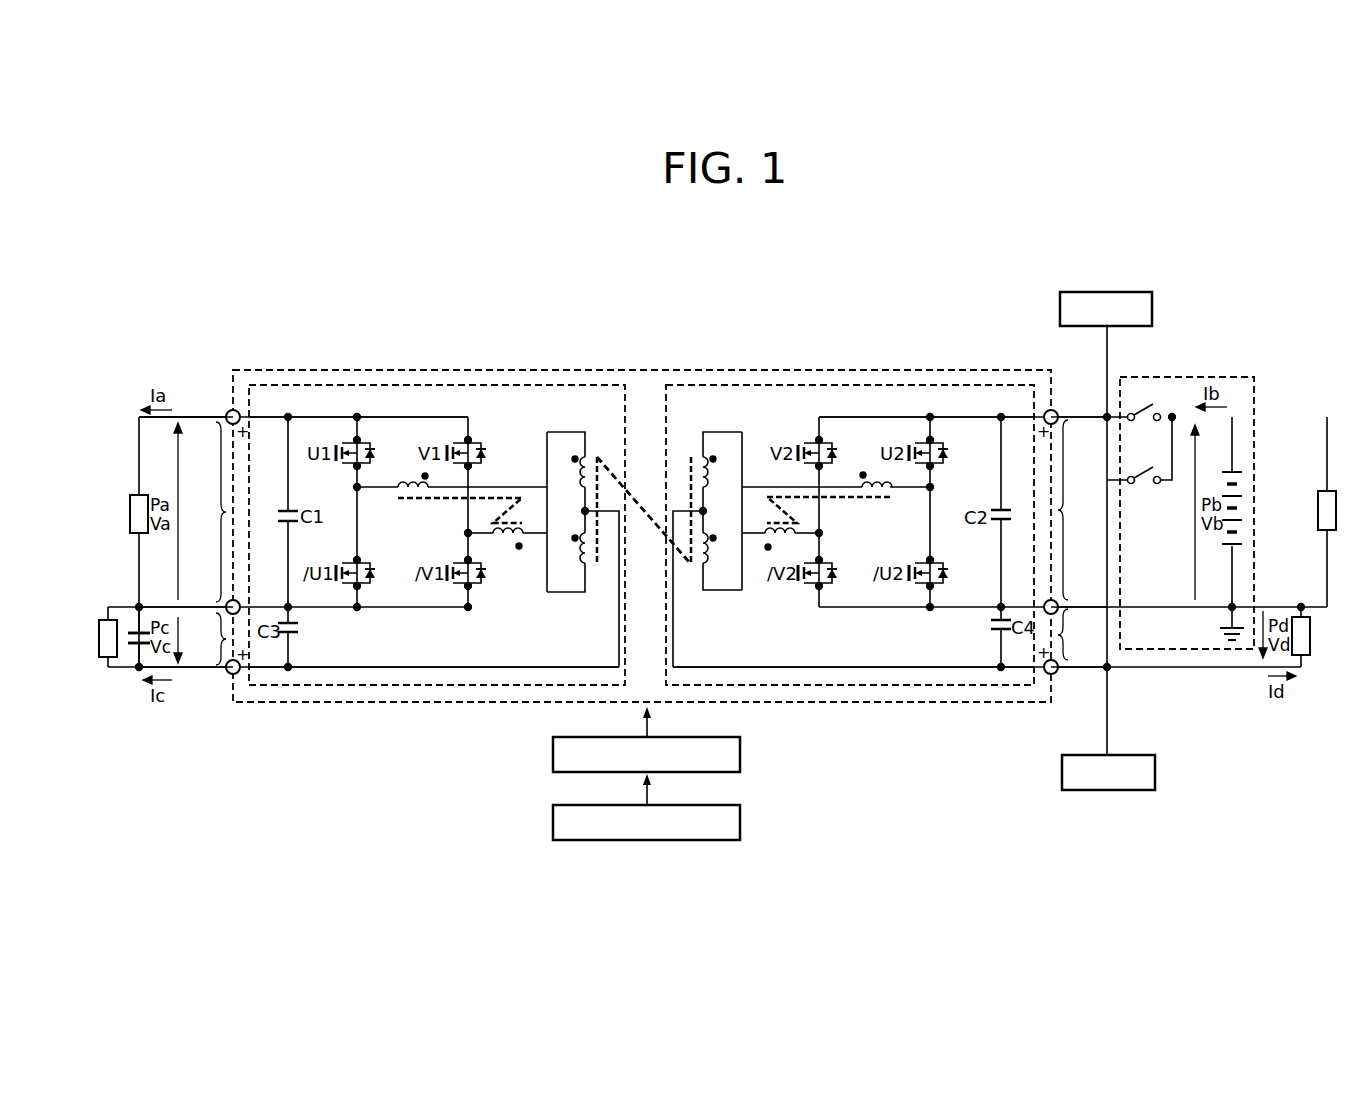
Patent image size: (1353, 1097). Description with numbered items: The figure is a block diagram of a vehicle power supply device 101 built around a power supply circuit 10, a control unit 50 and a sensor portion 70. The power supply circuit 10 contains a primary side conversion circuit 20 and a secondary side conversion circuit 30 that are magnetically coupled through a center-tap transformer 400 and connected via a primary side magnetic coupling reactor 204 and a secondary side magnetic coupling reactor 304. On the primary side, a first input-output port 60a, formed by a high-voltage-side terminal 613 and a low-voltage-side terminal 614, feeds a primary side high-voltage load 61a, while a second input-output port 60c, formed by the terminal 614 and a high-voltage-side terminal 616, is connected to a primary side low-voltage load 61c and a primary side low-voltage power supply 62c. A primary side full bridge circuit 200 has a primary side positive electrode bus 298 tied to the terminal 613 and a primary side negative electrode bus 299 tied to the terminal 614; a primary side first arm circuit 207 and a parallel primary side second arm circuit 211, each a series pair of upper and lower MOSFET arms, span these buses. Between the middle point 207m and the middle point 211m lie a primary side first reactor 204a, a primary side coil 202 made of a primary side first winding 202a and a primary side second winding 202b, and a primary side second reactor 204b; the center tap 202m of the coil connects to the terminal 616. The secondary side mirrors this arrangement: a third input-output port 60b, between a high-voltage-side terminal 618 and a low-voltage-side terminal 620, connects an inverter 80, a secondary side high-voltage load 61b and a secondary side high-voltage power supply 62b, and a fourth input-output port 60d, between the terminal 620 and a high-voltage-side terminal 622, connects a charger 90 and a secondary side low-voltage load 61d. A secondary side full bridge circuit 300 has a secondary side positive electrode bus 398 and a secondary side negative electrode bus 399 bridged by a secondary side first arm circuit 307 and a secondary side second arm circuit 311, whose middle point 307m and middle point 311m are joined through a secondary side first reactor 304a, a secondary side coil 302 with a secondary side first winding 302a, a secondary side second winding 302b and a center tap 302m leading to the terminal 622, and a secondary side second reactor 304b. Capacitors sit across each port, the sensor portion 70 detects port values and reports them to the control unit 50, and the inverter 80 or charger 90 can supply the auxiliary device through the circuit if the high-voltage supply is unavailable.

The power supply device 101 is at (186, 360).
The power supply circuit 10 is at (955, 370).
The primary side conversion circuit 20 is at (427, 380).
The primary side full bridge circuit 200 is at (505, 382).
The primary side coil 202 is at (563, 503).
The primary side first winding 202a is at (572, 458).
The primary side second winding 202b is at (576, 545).
The center tap 202m is at (585, 512).
The primary side magnetic coupling reactor 204 is at (460, 506).
The primary side first reactor 204a is at (408, 484).
The primary side second reactor 204b is at (513, 548).
The primary side first arm circuit 207 is at (348, 596).
The middle point of the primary side first arm circuit 207m is at (356, 487).
The primary side second arm circuit 211 is at (456, 596).
The middle point of the primary side second arm circuit 211m is at (466, 533).
The primary side positive electrode bus 298 is at (315, 414).
The primary side negative electrode bus 299 is at (317, 610).
The secondary side conversion circuit 30 is at (863, 378).
The secondary side full bridge circuit 300 is at (787, 382).
The secondary side coil 302 is at (727, 503).
The secondary side first winding 302a is at (716, 457).
The secondary side second winding 302b is at (713, 562).
The center tap 302m is at (706, 512).
The secondary side magnetic coupling reactor 304 is at (831, 520).
The secondary side first reactor 304a is at (863, 472).
The secondary side second reactor 304b is at (767, 550).
The secondary side first arm circuit 307 is at (903, 602).
The middle point of the secondary side first arm circuit 307m is at (931, 487).
The secondary side second arm circuit 311 is at (798, 602).
The middle point of the secondary side second arm circuit 311m is at (850, 546).
The secondary side positive electrode bus 398 is at (948, 415).
The secondary side negative electrode bus 399 is at (967, 609).
The transformer 400 is at (644, 486).
The control unit 50 is at (740, 753).
The sensor portion 70 is at (740, 822).
The inverter 80 is at (1108, 292).
The charger 90 is at (1134, 755).
The first input-output port 60a is at (186, 512).
The third input-output port 60b is at (1081, 512).
The second input-output port 60c is at (186, 637).
The fourth input-output port 60d is at (1081, 647).
The primary side high-voltage load 61a is at (129, 495).
The secondary side high-voltage load 61b is at (1321, 491).
The primary side low-voltage load 61c is at (108, 658).
The secondary side low-voltage load 61d is at (1307, 657).
The secondary side high-voltage power supply 62b is at (1231, 377).
The primary side low-voltage power supply 62c is at (137, 633).
The high-voltage-side terminal 613 is at (227, 412).
The low-voltage-side terminal 614 is at (238, 604).
The high-voltage-side terminal 616 is at (229, 673).
The high-voltage-side terminal 618 is at (1056, 412).
The low-voltage-side terminal 620 is at (1045, 603).
The high-voltage-side terminal 622 is at (1056, 673).